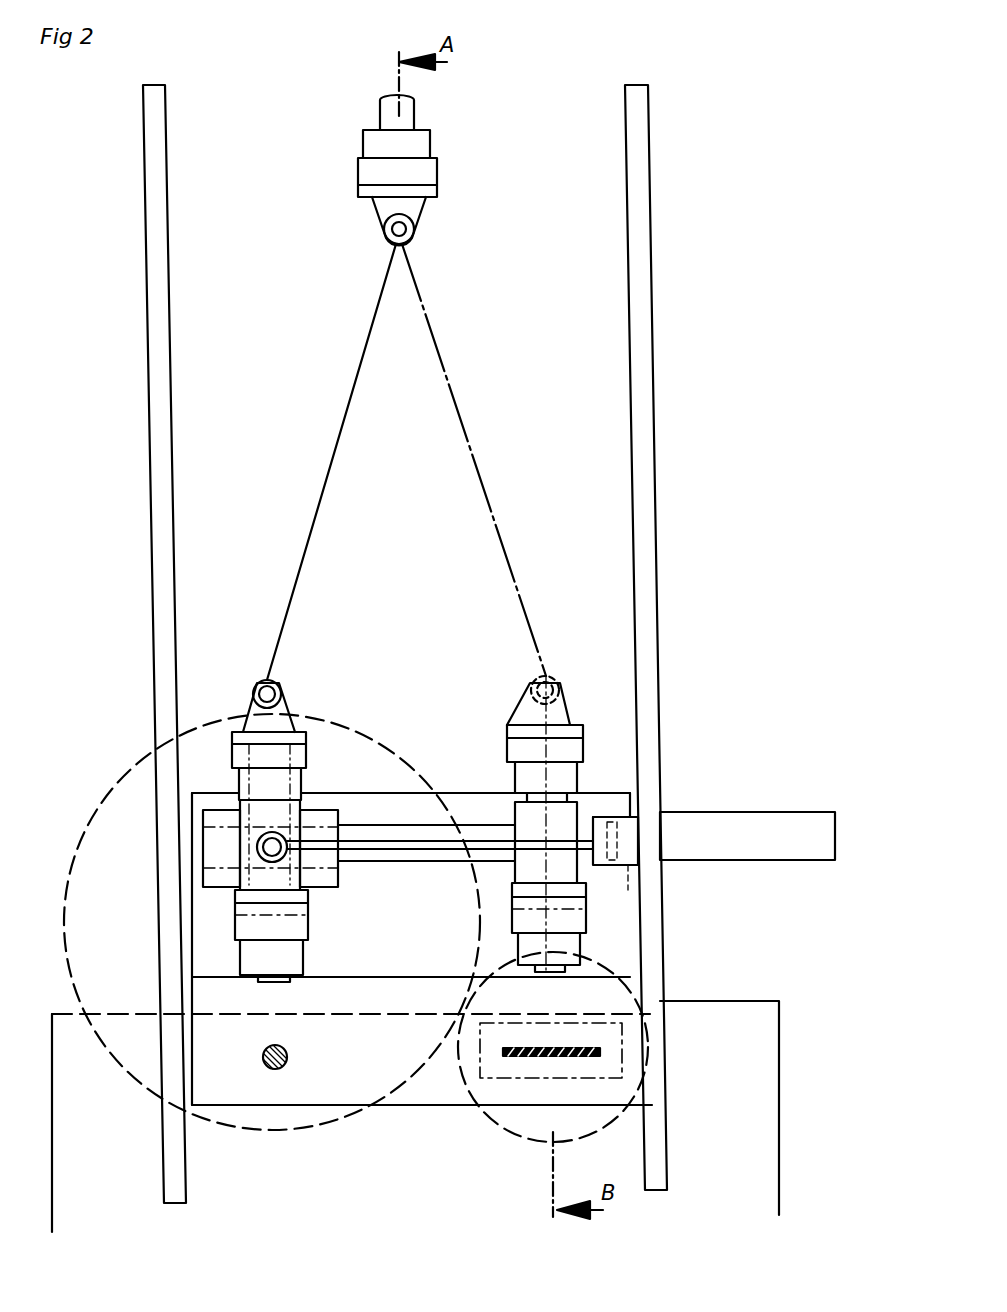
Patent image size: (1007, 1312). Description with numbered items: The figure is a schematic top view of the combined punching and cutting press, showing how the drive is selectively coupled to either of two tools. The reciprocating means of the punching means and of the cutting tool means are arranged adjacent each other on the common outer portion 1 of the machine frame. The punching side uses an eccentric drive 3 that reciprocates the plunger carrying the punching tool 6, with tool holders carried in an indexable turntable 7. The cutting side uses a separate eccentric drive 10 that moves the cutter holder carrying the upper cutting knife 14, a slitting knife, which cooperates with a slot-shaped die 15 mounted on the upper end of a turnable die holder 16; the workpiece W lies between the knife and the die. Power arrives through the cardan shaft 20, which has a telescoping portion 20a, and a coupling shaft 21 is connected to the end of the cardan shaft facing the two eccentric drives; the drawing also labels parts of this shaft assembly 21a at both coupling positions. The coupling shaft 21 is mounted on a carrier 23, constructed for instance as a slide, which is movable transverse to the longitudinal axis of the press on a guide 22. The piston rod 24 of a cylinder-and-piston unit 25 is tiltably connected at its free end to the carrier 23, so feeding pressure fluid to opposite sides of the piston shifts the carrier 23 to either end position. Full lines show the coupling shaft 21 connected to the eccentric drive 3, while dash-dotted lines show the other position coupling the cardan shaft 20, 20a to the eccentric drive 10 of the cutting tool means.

The outer portion of machine frame 1 is at (640, 278).
The eccentric drive 3 is at (317, 990).
The punching tool 6 is at (251, 1140).
The turntable 7 is at (336, 827).
The eccentric drive 10 is at (656, 1047).
The upper cutting knife 14 is at (681, 1092).
The slot-shaped die 15 is at (493, 1070).
The die holder 16 is at (358, 974).
The cardan shaft 20 is at (425, 172).
The telescoping portion of cardan shaft 20a is at (358, 380).
The coupling shaft 21 is at (815, 748).
The cylinder housings 21a is at (303, 927).
The guide 22 is at (554, 746).
The carrier 23 is at (191, 813).
The piston rod 24 is at (568, 713).
The cylinder-and-piston unit 25 is at (756, 879).
The workpiece W is at (757, 1192).